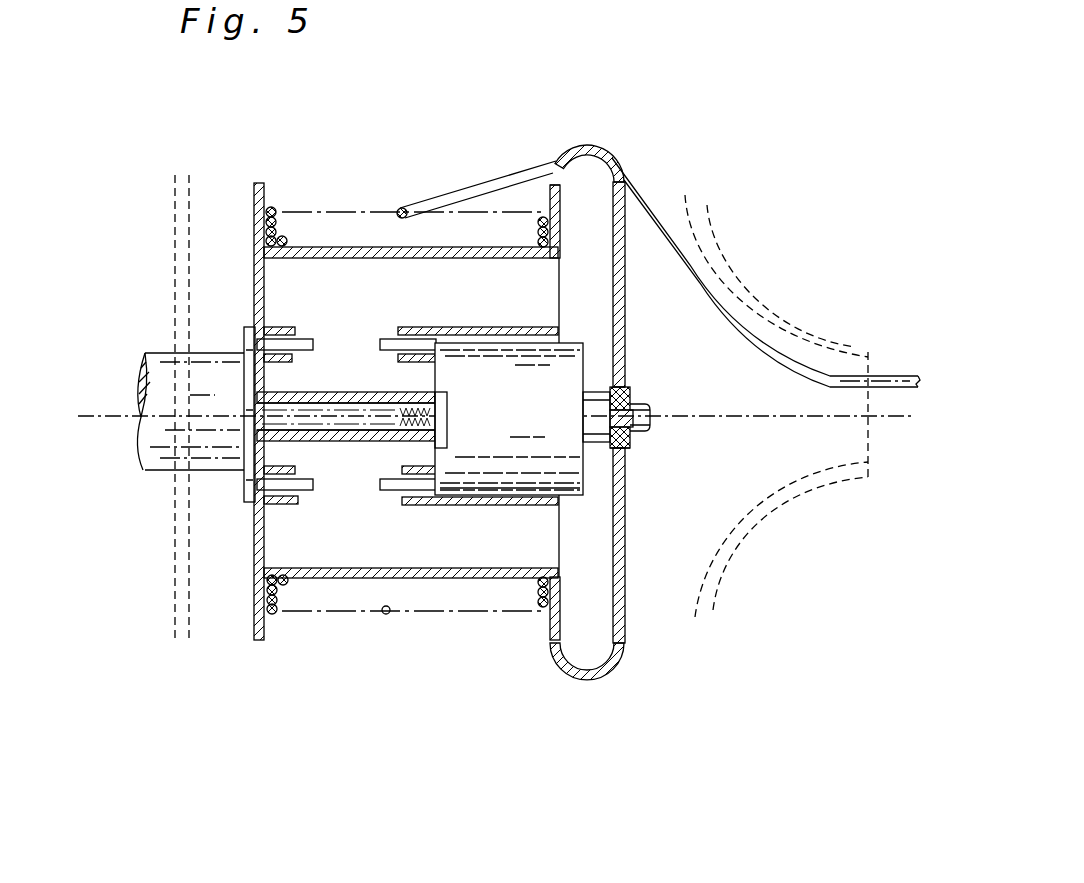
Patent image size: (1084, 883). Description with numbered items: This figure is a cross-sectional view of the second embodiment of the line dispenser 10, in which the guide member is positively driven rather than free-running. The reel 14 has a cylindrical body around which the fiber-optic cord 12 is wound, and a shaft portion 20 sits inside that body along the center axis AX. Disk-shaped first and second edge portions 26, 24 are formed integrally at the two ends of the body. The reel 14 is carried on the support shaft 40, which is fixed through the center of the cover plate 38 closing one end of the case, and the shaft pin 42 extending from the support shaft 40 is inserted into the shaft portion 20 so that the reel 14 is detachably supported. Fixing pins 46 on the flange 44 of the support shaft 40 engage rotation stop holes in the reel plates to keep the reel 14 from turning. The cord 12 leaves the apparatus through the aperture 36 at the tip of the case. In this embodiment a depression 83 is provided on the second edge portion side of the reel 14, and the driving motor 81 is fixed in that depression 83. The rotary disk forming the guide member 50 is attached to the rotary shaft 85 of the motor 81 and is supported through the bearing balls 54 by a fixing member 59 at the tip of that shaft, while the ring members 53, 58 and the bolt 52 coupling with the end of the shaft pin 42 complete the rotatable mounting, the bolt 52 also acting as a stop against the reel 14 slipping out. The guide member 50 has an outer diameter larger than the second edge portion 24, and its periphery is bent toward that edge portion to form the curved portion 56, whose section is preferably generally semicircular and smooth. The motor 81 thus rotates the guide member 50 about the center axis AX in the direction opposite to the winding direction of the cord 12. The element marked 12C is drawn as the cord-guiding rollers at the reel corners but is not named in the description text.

The line dispenser 10 is at (767, 526).
The fiber-optic cord 12 is at (902, 377).
The rollers 12C is at (277, 212).
The reel 14 is at (388, 200).
The shaft portion 20 is at (338, 395).
The second edge portion 24 is at (547, 622).
The first edge portion 26 is at (273, 623).
The aperture 36 is at (858, 441).
The cover plate 38 is at (178, 528).
The support shaft 40 is at (167, 362).
The shaft pin 42 is at (342, 413).
The flange 44 is at (242, 338).
The fixing pins 46 is at (387, 337).
The guide member 50 is at (620, 580).
The bolt 52 is at (442, 418).
The ring member 53 is at (636, 443).
The bearing balls 54 is at (627, 387).
The curved portion 56 is at (603, 674).
The ring member 58 is at (620, 390).
The fixing member 59 is at (643, 404).
The driving motor 81 is at (568, 478).
The depression 83 is at (569, 338).
The rotary shaft 85 is at (650, 423).
The center axis AX is at (92, 417).